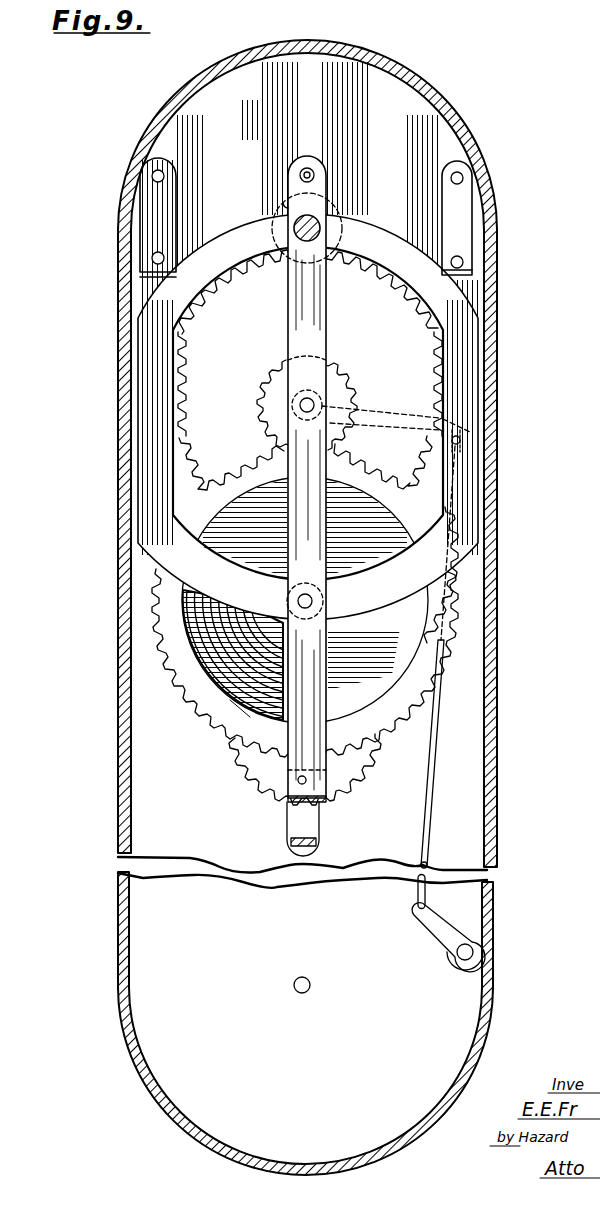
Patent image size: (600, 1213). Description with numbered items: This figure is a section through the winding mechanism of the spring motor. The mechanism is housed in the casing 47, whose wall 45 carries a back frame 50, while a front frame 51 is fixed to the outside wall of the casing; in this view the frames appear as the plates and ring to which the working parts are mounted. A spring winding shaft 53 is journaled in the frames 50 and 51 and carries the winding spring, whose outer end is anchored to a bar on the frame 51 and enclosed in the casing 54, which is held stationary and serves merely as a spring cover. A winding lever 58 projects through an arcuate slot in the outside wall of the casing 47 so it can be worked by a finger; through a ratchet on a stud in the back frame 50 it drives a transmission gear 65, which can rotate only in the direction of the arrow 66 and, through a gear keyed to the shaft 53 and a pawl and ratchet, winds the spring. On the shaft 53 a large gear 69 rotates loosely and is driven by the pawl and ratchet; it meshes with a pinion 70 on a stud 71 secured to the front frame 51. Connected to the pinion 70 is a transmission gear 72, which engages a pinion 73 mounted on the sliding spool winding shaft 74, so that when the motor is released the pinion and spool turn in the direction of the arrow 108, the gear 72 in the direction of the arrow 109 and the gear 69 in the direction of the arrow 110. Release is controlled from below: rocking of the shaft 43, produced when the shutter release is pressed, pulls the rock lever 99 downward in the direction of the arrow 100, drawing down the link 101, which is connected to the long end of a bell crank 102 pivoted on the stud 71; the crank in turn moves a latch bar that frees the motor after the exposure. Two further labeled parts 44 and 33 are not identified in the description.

The casing upper wall 44 is at (497, 363).
The casing 47 is at (496, 834).
The wall 45 is at (472, 1002).
The back frame 50 is at (148, 246).
The transmission gear 72 is at (440, 337).
The front frame 51 is at (484, 537).
The spring winding shaft 53 is at (313, 601).
The winding lever 58 is at (292, 825).
The pinion 73 is at (328, 208).
The sliding spool winding shaft 74 is at (321, 231).
The arrow 108 is at (283, 207).
The arrow 109 is at (188, 390).
The pinion 70 is at (342, 396).
The stud 71 is at (307, 398).
The bell crank 102 is at (455, 422).
The casing 54 is at (210, 708).
The large gear 69 is at (452, 640).
The transmission gear 65 is at (378, 772).
The arrow 66 is at (250, 761).
The arrow 110 is at (167, 586).
The spring housing 33 is at (284, 663).
The link 101 is at (430, 789).
The rock lever 99 is at (437, 938).
The shaft 43 is at (467, 952).
The arrow 100 is at (405, 940).